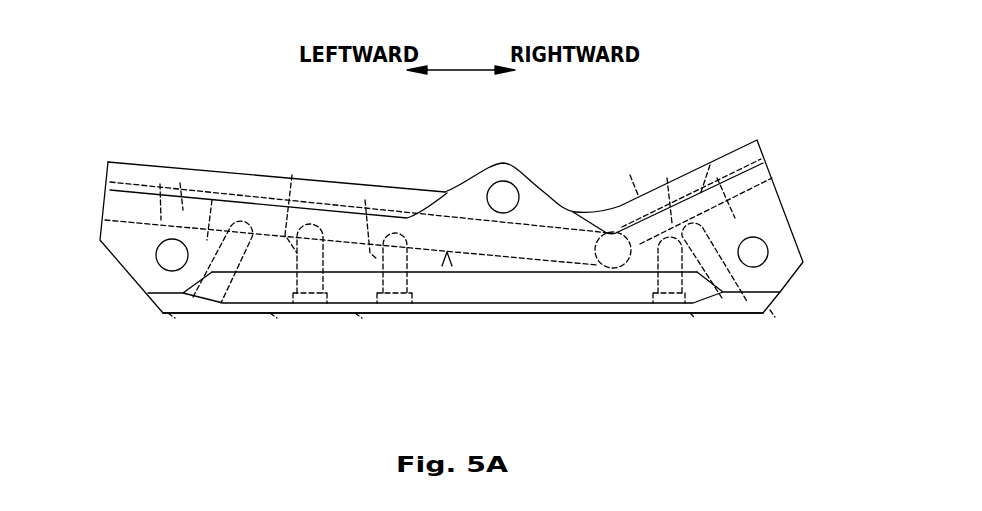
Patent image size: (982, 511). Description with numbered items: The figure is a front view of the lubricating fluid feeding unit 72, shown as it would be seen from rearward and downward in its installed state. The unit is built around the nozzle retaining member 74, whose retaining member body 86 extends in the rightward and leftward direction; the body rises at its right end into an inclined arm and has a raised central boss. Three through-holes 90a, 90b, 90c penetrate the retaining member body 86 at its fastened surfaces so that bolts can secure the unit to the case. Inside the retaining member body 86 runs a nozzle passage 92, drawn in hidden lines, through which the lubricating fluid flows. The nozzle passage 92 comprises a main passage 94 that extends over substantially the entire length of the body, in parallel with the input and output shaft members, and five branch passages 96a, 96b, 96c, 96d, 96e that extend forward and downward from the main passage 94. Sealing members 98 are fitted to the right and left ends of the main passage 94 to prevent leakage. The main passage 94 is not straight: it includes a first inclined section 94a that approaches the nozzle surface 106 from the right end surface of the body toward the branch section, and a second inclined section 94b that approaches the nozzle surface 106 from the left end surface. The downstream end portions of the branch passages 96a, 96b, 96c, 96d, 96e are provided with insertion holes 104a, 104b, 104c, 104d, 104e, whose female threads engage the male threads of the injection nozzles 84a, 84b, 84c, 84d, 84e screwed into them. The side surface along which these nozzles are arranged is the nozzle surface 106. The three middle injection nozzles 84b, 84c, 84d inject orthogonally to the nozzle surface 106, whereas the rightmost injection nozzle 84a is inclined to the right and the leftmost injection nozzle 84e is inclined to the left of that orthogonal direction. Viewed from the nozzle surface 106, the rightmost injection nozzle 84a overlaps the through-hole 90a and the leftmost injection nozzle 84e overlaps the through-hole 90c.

The lubricating fluid feeding unit 72 is at (261, 101).
The nozzle retaining member 74 is at (678, 177).
The injection nozzle 84a is at (745, 317).
The injection nozzle 84b is at (663, 317).
The injection nozzle 84c is at (392, 318).
The injection nozzle 84d is at (307, 318).
The injection nozzle 84e is at (207, 318).
The retaining member body 86 is at (538, 213).
The through-hole 90a is at (769, 251).
The through-hole 90b is at (493, 184).
The through-hole 90c is at (160, 267).
The nozzle passage 92 is at (447, 268).
The main passage 94 is at (533, 258).
The first inclined section 94a is at (667, 178).
The second inclined section 94b is at (180, 183).
The branch passage 96a is at (710, 165).
The branch passage 96b is at (630, 175).
The branch passage 96c is at (365, 200).
The branch passage 96d is at (292, 175).
The branch passage 96e is at (212, 200).
The sealing member 98 is at (778, 172).
The insertion hole 104a is at (775, 317).
The insertion hole 104b is at (695, 315).
The insertion hole 104c is at (362, 318).
The insertion hole 104d is at (277, 318).
The insertion hole 104e is at (175, 318).
The nozzle surface 106 is at (500, 315).